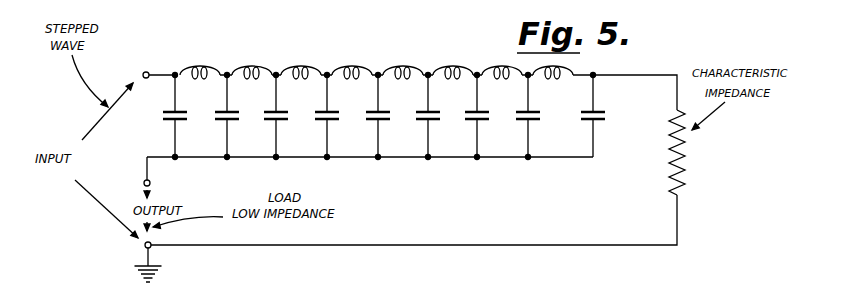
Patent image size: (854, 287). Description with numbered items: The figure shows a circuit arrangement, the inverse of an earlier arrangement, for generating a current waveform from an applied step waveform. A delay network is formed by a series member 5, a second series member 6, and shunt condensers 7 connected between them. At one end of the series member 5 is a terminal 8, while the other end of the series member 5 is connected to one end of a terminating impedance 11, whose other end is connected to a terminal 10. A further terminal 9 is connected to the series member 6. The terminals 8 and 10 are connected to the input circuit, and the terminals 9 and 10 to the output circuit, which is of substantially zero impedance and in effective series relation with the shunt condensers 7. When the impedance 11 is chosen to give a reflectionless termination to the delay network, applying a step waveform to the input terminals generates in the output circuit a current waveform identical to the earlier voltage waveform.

The series member 5 is at (397, 66).
The series member 6 is at (394, 160).
The shunt condensers 7 is at (339, 124).
The terminal 8 is at (147, 72).
The further terminal 9 is at (144, 182).
The terminal 10 is at (145, 247).
The terminating impedance 11 is at (685, 167).